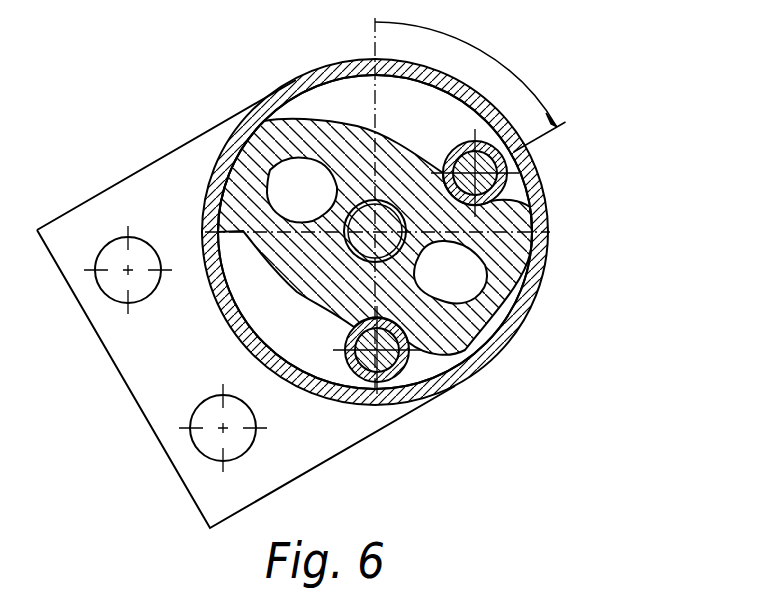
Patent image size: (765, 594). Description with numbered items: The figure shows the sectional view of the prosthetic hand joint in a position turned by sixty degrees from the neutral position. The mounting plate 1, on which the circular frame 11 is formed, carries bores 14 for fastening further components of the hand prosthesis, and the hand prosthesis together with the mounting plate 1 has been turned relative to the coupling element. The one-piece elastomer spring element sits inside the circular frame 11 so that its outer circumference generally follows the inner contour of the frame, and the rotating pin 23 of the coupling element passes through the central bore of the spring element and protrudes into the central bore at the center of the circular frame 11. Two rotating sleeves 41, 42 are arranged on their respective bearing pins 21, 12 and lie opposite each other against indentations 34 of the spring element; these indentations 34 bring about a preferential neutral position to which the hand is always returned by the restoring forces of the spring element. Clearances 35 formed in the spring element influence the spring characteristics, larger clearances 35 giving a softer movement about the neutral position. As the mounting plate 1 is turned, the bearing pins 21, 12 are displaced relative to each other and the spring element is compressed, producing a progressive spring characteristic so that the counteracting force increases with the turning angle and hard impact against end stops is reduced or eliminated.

The mounting plate 1 is at (320, 448).
The circular frame 11 is at (520, 326).
The bearing pin 12 is at (508, 174).
The bores 14 is at (108, 290).
The bearing pin 21 is at (407, 367).
The rotating pin 23 is at (318, 125).
The indentations 34 is at (413, 157).
The clearances 35 is at (290, 178).
The rotating sleeve 41 is at (440, 383).
The rotating sleeve 42 is at (550, 232).